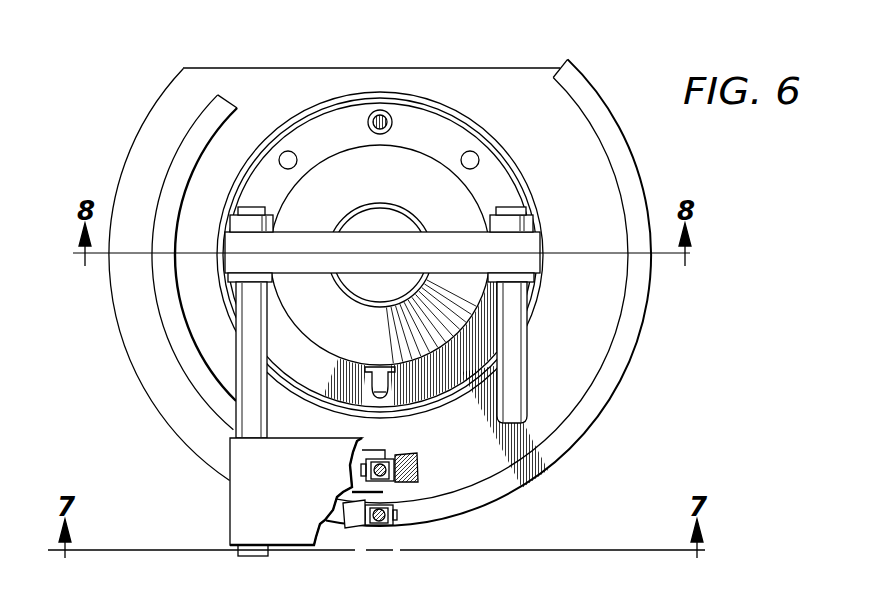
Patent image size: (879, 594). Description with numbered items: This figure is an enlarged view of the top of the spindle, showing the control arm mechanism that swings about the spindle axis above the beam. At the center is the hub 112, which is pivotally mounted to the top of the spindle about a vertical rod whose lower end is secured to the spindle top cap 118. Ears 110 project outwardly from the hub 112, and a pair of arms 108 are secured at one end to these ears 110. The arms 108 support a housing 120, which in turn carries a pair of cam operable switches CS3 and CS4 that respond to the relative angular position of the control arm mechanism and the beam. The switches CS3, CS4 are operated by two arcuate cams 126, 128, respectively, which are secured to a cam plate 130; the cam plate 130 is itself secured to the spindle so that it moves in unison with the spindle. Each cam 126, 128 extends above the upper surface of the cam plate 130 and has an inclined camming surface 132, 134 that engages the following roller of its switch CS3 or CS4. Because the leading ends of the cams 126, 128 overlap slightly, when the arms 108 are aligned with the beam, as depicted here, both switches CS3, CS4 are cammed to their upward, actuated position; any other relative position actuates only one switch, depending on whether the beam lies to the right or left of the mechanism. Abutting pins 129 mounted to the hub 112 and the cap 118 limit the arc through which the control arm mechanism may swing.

The cam plate 130 is at (518, 78).
The arcuate cam 128 is at (500, 487).
The arcuate cam 126 is at (178, 333).
The spindle top cap 118 is at (437, 376).
The hub 112 is at (452, 207).
The abutting pins 129 is at (288, 151).
The ears 110 is at (233, 247).
The arms 108 is at (250, 348).
The housing 120 is at (247, 497).
The cam operable switch CS3 is at (385, 463).
The inclined camming surface 132 is at (420, 466).
The cam operable switch CS4 is at (388, 513).
The inclined camming surface 134 is at (352, 516).